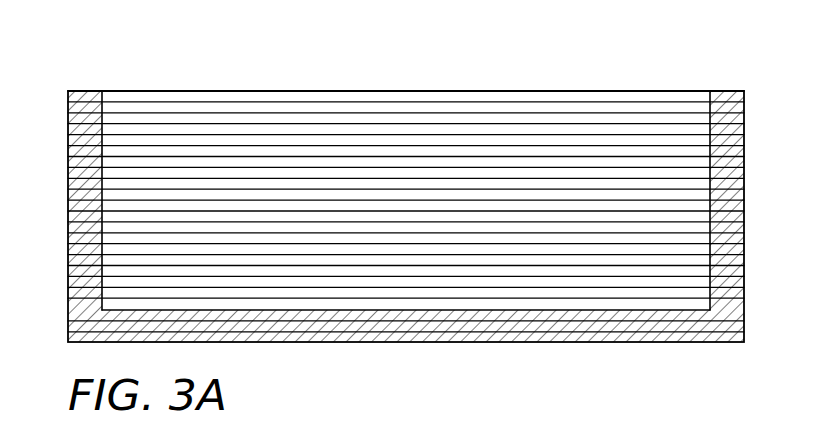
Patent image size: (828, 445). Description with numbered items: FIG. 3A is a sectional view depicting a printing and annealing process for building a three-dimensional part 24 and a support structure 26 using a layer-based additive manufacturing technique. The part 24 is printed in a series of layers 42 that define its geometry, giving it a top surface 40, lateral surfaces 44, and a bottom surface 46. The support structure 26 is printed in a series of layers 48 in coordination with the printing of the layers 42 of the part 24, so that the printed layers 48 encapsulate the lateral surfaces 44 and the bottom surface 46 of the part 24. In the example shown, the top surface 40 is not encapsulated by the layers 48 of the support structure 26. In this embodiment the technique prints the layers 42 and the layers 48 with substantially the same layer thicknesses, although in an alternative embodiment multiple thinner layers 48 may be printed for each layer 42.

The 3D part 24 is at (404, 200).
The support structure 26 is at (404, 227).
The top surface 40 is at (308, 91).
The layers 42 is at (147, 118).
The lateral surfaces 44 is at (102, 198).
The bottom surface 46 is at (417, 312).
The layers 48 is at (68, 128).